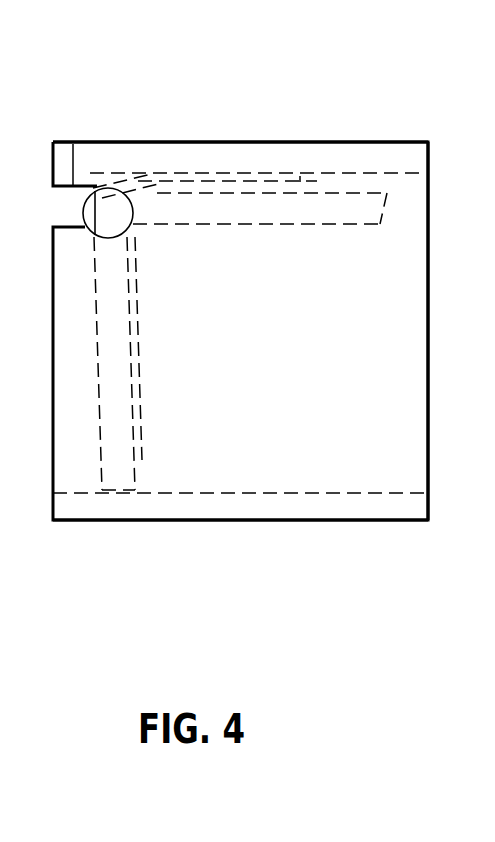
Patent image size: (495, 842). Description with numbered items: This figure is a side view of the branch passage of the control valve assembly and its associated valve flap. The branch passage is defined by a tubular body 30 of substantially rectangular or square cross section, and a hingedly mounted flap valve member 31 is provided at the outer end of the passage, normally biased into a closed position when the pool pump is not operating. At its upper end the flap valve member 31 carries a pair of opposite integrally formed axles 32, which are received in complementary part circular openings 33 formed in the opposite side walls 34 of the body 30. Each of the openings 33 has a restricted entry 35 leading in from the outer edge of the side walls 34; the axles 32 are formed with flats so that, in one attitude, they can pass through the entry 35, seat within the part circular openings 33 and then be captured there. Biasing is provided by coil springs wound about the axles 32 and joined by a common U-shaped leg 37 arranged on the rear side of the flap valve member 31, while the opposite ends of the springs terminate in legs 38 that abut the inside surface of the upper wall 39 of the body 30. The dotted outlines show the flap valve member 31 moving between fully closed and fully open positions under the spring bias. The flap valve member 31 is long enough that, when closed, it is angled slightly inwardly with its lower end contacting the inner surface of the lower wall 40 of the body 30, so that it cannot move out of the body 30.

The tubular body 30 is at (320, 102).
The flap valve member 31 is at (102, 340).
The axles 32 is at (87, 210).
The part circular openings 33 is at (130, 210).
The side walls 34 is at (402, 338).
The restricted entry 35 is at (73, 147).
The U-shaped leg 37 is at (145, 443).
The legs 38 is at (213, 175).
The upper wall 39 is at (397, 157).
The lower wall 40 is at (280, 508).